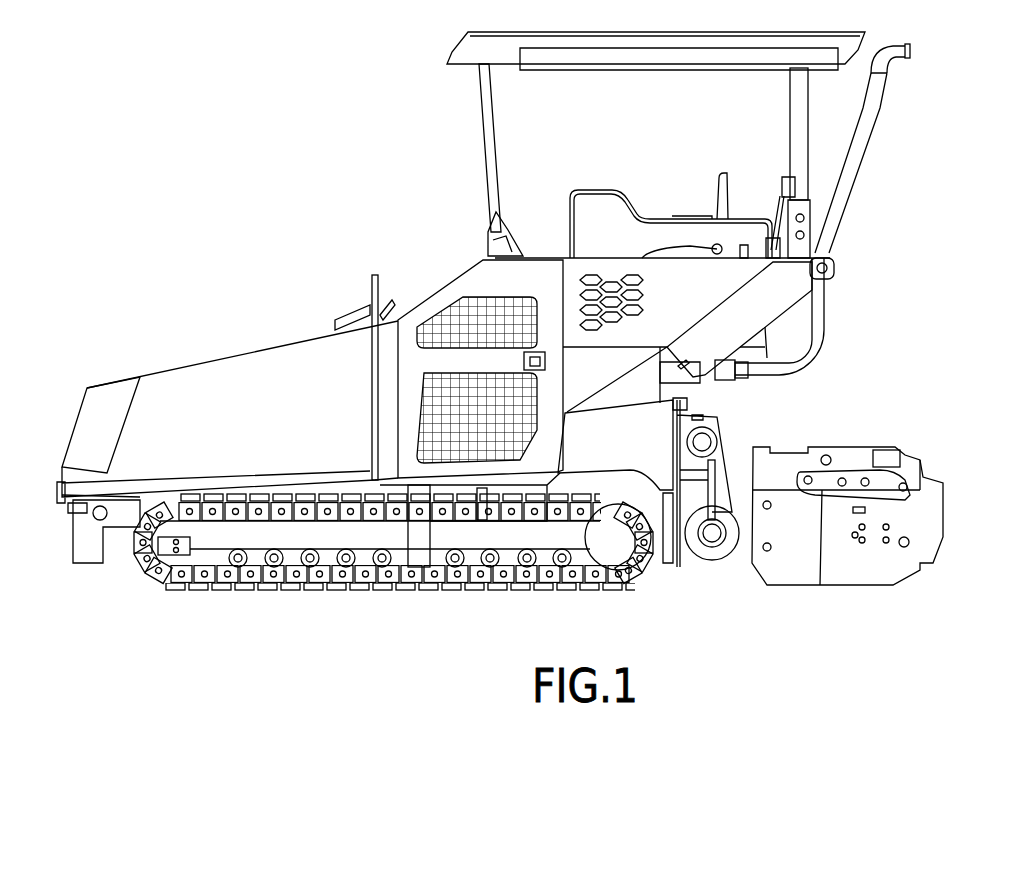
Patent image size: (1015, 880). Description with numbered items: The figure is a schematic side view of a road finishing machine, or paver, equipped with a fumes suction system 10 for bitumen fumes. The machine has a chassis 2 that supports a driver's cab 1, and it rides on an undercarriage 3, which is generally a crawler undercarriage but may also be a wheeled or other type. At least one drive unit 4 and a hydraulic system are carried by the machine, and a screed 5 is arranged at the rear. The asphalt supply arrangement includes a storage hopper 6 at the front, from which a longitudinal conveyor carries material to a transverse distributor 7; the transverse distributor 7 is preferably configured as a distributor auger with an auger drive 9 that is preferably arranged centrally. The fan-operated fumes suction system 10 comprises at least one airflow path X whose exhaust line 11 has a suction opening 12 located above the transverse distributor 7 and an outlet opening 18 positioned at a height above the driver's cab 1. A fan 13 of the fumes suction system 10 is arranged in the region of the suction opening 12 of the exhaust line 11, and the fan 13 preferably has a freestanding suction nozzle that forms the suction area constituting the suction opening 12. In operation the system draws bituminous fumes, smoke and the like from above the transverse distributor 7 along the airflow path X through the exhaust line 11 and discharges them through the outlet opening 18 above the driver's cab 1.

The driver's cab 1 is at (640, 213).
The chassis 2 is at (609, 449).
The undercarriage 3 is at (405, 592).
The drive unit 4 is at (465, 424).
The screed 5 is at (905, 458).
The storage hopper 6 is at (250, 348).
The transverse distributor 7 is at (712, 548).
The auger drive 9 is at (705, 442).
The fumes suction system 10 is at (845, 305).
The exhaust line 11 is at (862, 140).
The suction opening 12 is at (712, 382).
The fan 13 is at (720, 372).
The outlet opening 18 is at (910, 49).
The airflow path X is at (855, 187).